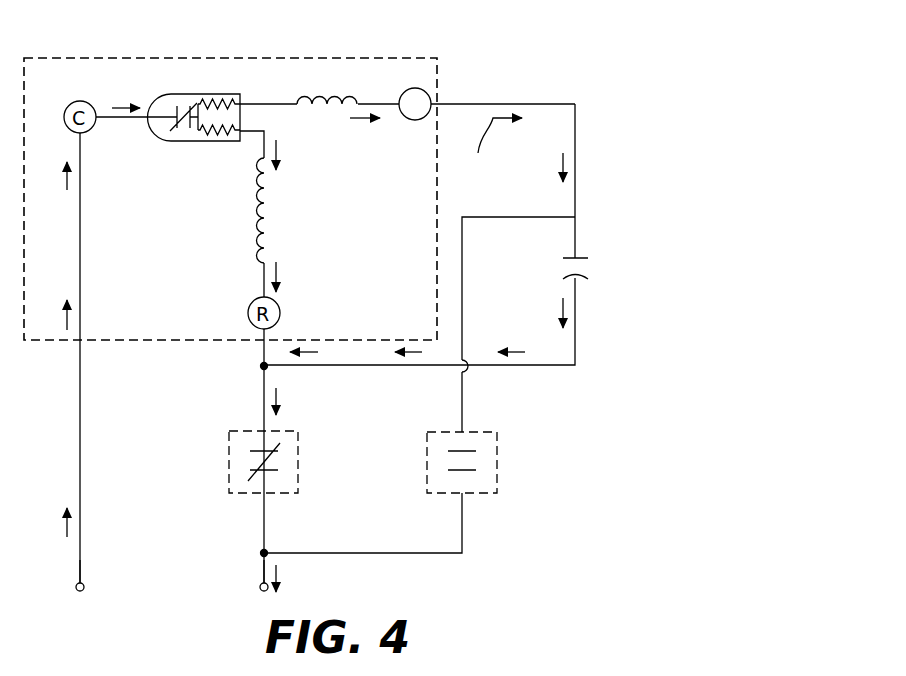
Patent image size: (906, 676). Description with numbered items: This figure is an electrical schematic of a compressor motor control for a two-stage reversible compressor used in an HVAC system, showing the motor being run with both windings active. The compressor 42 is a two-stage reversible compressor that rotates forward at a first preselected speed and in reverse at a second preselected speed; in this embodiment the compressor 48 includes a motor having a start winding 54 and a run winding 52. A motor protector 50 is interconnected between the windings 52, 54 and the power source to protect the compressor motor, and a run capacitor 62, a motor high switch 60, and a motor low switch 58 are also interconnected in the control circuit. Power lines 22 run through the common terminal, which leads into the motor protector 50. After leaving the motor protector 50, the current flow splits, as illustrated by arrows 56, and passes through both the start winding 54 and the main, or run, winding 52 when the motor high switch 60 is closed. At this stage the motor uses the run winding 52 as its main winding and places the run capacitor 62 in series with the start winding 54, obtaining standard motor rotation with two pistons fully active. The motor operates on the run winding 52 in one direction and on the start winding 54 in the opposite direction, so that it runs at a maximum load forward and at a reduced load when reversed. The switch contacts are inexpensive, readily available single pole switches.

The power lines 22 is at (262, 543).
The compressor 42 is at (437, 58).
The compressor 48 is at (108, 54).
The motor protector 50 is at (182, 142).
The run winding 52 is at (264, 222).
The start winding 54 is at (338, 108).
The arrows 56 is at (266, 150).
The motor low switch 58 is at (497, 437).
The motor high switch 60 is at (298, 437).
The run capacitor 62 is at (581, 258).